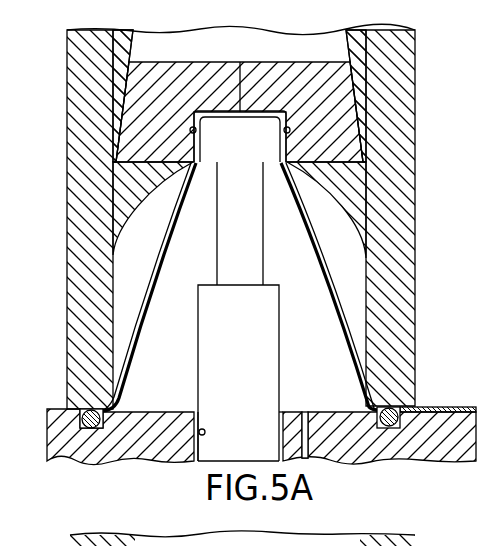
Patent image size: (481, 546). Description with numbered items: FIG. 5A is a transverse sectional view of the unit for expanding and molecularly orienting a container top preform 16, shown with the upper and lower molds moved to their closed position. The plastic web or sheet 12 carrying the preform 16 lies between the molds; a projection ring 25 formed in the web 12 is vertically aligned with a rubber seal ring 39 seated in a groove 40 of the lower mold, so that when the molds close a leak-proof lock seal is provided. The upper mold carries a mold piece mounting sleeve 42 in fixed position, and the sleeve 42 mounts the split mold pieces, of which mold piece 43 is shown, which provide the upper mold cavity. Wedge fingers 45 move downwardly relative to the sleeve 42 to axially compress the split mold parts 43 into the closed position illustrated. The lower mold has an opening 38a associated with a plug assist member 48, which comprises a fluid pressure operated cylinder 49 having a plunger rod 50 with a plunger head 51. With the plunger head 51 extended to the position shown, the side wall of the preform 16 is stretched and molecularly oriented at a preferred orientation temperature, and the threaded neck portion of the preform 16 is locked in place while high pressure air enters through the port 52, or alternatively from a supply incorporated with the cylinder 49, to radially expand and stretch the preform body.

The plastic web 12 is at (436, 406).
The container top preform 16 is at (345, 262).
The projection ring 25 is at (95, 405).
The opening 38a is at (198, 434).
The rubber seal ring 39 is at (392, 430).
The groove 40 is at (87, 432).
The mold piece mounting sleeve 42 is at (75, 276).
The split mold piece 43 is at (140, 128).
The wedge finger 45 is at (120, 50).
The plug assist member 48 is at (211, 451).
The fluid pressure operated cylinder 49 is at (241, 372).
The plunger rod 50 is at (223, 239).
The plunger head 51 is at (250, 149).
The port 52 is at (318, 410).